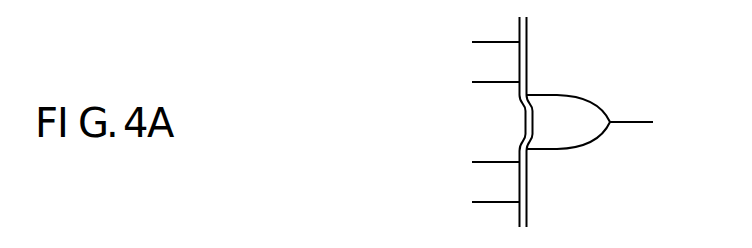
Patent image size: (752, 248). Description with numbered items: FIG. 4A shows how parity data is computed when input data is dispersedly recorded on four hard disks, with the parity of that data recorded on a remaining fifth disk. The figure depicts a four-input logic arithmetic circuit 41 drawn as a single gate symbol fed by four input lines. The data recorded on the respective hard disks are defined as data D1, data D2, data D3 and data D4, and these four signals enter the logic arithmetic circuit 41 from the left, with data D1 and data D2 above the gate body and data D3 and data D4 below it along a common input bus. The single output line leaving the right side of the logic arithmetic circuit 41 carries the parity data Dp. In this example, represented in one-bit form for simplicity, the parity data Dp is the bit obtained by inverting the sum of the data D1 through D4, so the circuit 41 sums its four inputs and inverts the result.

The four-input logic arithmetic circuit 41 is at (554, 93).
The data D1 is at (473, 41).
The data D2 is at (473, 81).
The data D3 is at (473, 161).
The data D4 is at (473, 201).
The parity data Dp is at (653, 120).